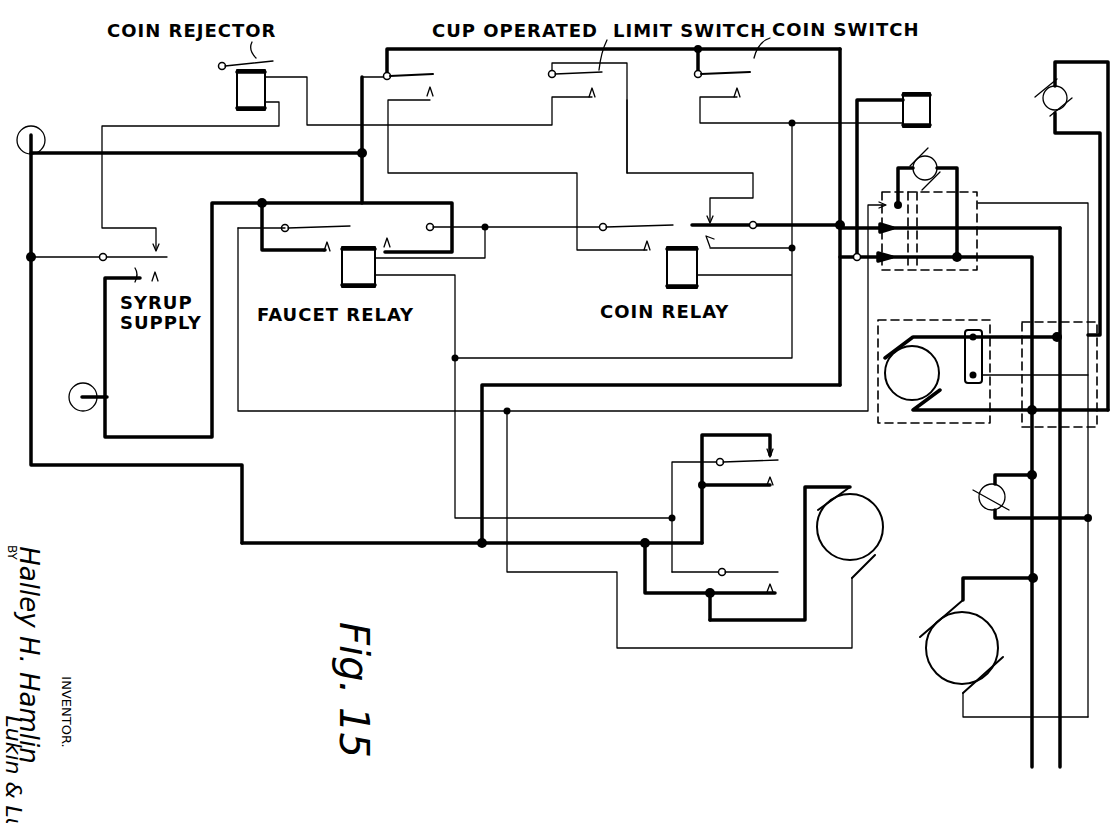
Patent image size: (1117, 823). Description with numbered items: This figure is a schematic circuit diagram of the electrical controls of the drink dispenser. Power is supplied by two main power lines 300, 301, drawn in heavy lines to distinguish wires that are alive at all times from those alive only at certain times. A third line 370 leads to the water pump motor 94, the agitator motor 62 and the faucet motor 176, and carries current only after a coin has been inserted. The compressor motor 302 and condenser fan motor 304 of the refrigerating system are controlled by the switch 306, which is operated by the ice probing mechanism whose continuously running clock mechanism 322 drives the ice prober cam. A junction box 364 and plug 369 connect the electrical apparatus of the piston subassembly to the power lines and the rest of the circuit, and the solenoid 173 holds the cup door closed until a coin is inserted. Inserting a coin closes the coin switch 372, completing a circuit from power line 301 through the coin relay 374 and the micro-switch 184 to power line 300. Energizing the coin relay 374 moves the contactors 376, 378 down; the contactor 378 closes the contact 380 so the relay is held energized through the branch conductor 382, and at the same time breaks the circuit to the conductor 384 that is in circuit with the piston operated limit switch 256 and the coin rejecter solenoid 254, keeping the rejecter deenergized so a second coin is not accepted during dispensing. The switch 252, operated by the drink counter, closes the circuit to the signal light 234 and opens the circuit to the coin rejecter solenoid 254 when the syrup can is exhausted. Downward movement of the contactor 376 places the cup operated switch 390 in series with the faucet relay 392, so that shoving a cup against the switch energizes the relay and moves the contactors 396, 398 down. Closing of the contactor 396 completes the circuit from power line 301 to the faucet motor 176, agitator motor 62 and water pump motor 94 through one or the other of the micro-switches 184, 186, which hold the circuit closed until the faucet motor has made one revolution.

The coin rejecter solenoid 254 is at (236, 90).
The switch 252 is at (162, 260).
The signal light 234 is at (80, 410).
The main power line 301 is at (362, 189).
The main power line 300 is at (556, 384).
The faucet relay 392 is at (340, 264).
The contactor 396 is at (332, 226).
The contactor 398 is at (380, 212).
The cup operated switch 390 is at (436, 82).
The limit switch 256 is at (603, 88).
The conductor 384 is at (631, 142).
The coin switch 372 is at (740, 82).
The coin relay 374 is at (666, 264).
The contactor 376 is at (651, 222).
The contactor 378 is at (702, 222).
The contact 380 is at (712, 242).
The branch conductor 382 is at (822, 225).
The solenoid 173 is at (930, 110).
The agitator motor 62 is at (932, 163).
The third line 370 is at (870, 204).
The water pump motor 94 is at (1051, 104).
The junction box 364 is at (970, 218).
The plug 369 is at (900, 270).
The clock mechanism motor 322 is at (888, 406).
The switch 306 is at (983, 346).
The condenser fan motor 304 is at (980, 499).
The compressor motor 302 is at (936, 671).
The faucet motor 176 is at (883, 533).
The micro-switch 184 is at (781, 461).
The micro-switch 186 is at (752, 572).